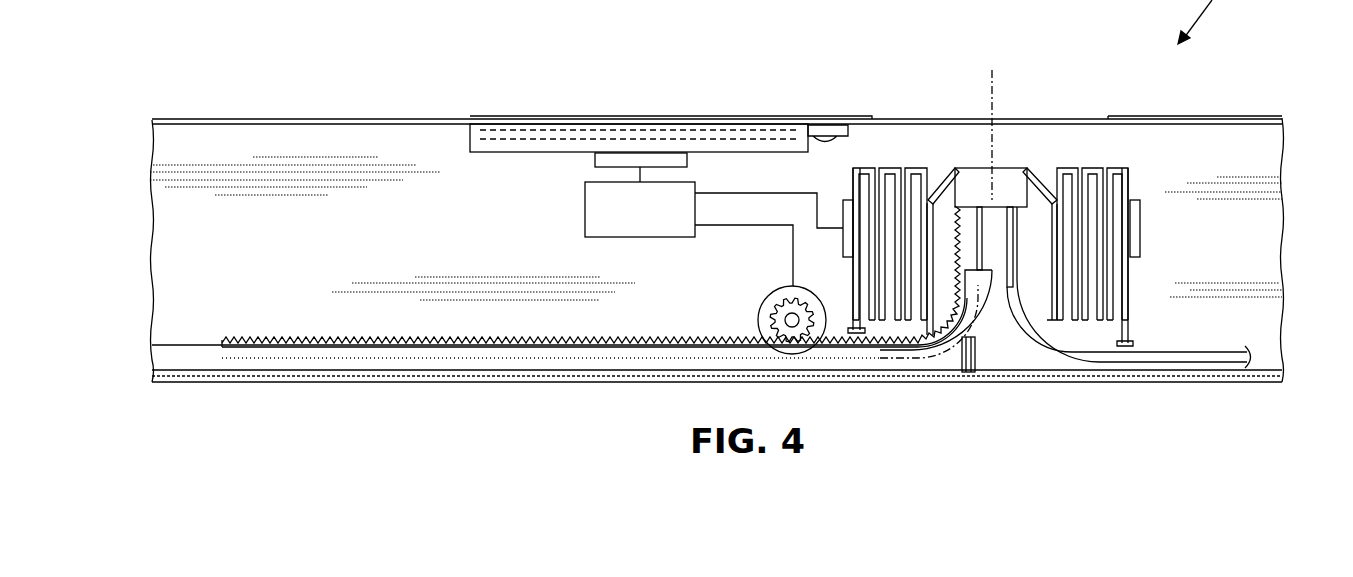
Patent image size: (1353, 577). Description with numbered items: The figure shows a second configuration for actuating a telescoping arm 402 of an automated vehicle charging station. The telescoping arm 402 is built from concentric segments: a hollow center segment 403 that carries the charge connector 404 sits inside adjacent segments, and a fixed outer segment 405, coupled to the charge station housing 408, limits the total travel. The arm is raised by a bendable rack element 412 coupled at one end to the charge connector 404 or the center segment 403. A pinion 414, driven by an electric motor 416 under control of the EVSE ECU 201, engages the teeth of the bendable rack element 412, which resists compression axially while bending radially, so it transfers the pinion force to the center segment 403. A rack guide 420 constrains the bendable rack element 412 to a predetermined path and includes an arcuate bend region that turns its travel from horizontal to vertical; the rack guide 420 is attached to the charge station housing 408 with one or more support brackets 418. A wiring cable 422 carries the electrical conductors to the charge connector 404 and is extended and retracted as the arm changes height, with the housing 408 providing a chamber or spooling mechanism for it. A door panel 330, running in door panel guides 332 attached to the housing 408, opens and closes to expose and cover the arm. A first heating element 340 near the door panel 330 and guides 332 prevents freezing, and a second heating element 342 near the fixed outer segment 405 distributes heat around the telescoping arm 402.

The EVSE ECU 201 is at (585, 210).
The door panel 330 is at (808, 118).
The door panel guides 332 is at (492, 150).
The first heating element 340 is at (595, 157).
The second heating element 342 is at (843, 220).
The telescoping arm 402 is at (1005, 55).
The center segment 403 is at (1048, 200).
The charge connector 404 is at (982, 168).
The fixed outer segment 405 is at (1113, 170).
The charge station housing 408 is at (357, 118).
The bendable rack element 412 is at (957, 245).
The pinion 414 is at (762, 318).
The electric motor 416 is at (770, 285).
The support brackets 418 is at (977, 353).
The rack guide 420 is at (183, 357).
The wiring cable 422 is at (1017, 247).